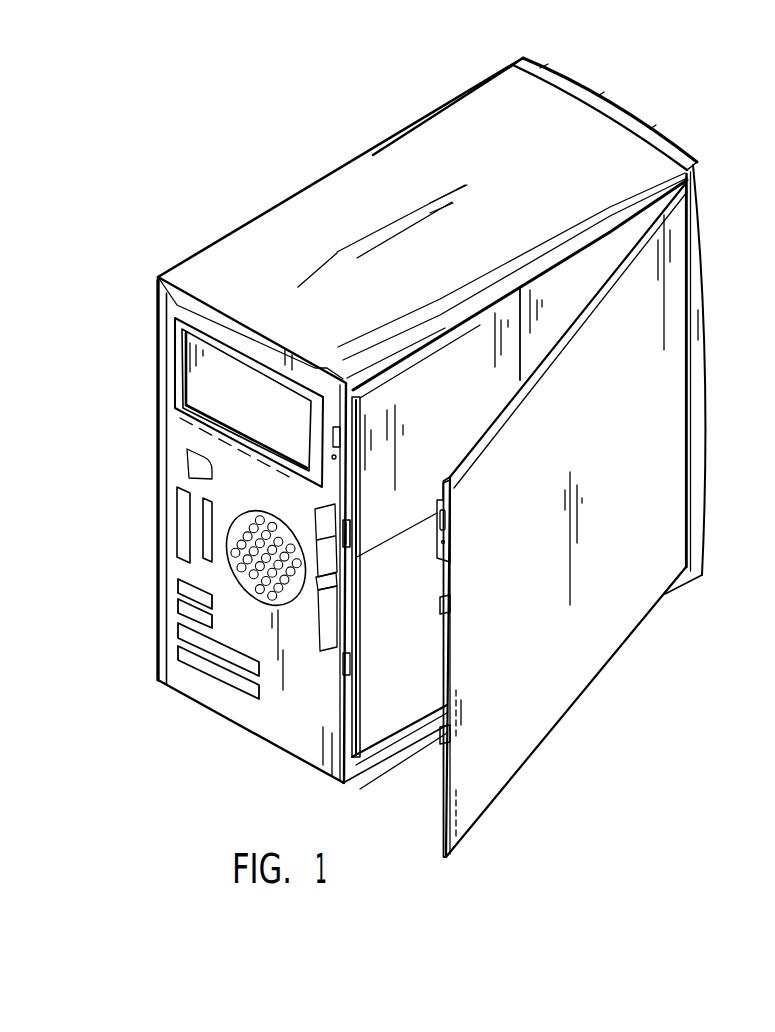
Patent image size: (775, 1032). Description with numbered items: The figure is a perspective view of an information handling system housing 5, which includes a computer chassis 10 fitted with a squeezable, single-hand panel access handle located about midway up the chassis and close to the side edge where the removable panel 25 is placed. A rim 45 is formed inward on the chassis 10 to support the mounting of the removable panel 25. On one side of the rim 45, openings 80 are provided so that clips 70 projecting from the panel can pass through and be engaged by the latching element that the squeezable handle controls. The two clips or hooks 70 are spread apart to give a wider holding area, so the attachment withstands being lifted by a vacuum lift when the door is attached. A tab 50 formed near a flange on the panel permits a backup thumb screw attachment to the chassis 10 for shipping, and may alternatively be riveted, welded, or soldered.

The computer chassis 10 is at (250, 272).
The information handling system housing 5 is at (157, 405).
The rim 45 is at (462, 317).
The openings 80 is at (352, 533).
The removable panel 25 is at (518, 627).
The tab 50 is at (437, 513).
The clips 70 is at (443, 610).